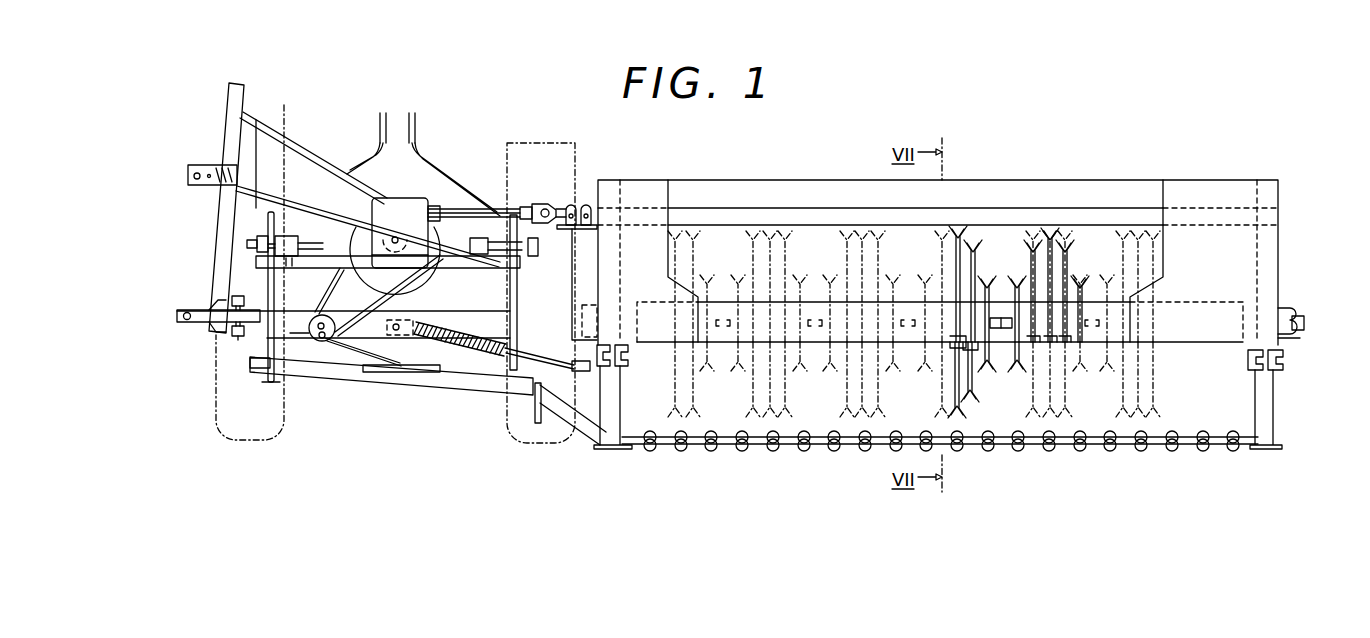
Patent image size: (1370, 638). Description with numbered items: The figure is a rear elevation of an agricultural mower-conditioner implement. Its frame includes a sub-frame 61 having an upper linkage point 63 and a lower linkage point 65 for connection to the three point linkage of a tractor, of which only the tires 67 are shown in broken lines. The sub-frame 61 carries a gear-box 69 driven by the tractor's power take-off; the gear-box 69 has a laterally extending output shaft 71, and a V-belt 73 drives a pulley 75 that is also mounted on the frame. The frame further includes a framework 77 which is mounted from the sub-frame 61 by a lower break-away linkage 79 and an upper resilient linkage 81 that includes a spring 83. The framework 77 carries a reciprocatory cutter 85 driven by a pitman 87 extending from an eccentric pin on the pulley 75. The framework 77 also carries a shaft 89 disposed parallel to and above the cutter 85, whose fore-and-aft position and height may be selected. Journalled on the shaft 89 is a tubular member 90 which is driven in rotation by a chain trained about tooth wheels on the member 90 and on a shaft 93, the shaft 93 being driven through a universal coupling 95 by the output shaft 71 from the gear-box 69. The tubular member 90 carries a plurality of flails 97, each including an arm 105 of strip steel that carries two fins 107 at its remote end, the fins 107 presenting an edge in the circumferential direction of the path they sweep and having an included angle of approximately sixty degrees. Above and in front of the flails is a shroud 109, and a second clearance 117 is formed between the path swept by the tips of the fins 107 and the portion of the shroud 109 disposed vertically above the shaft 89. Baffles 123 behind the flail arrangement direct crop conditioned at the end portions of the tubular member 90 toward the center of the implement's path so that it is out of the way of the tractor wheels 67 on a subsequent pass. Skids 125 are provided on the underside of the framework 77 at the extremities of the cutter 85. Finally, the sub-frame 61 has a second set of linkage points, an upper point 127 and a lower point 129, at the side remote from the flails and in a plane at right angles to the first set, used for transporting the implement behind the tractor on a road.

The sub-frame 61 is at (443, 148).
The upper linkage point 63 is at (417, 123).
The lower linkage point 65 is at (300, 247).
The tractor tires 67 is at (216, 403).
The gear-box 69 is at (420, 205).
The output shaft 71 is at (479, 208).
The V-belt 73 is at (384, 302).
The pulley 75 is at (327, 316).
The framework 77 is at (1284, 188).
The break-away linkage 79 is at (568, 428).
The resilient linkage 81 is at (536, 363).
The spring 83 is at (452, 333).
The reciprocatory cutter 85 is at (727, 450).
The pitman 87 is at (352, 355).
The shaft 89 is at (1300, 330).
The tubular member 90 is at (1090, 345).
The shaft 93 is at (580, 208).
The universal coupling 95 is at (536, 204).
The flails 97 is at (981, 261).
The arm 105 is at (973, 397).
The fins 107 is at (985, 372).
The shroud 109 is at (1015, 190).
The second clearance 117 is at (948, 231).
The baffles 123 is at (650, 237).
The skids 125 is at (609, 447).
The second upper linkage point 127 is at (197, 173).
The second lower linkage point 129 is at (187, 312).